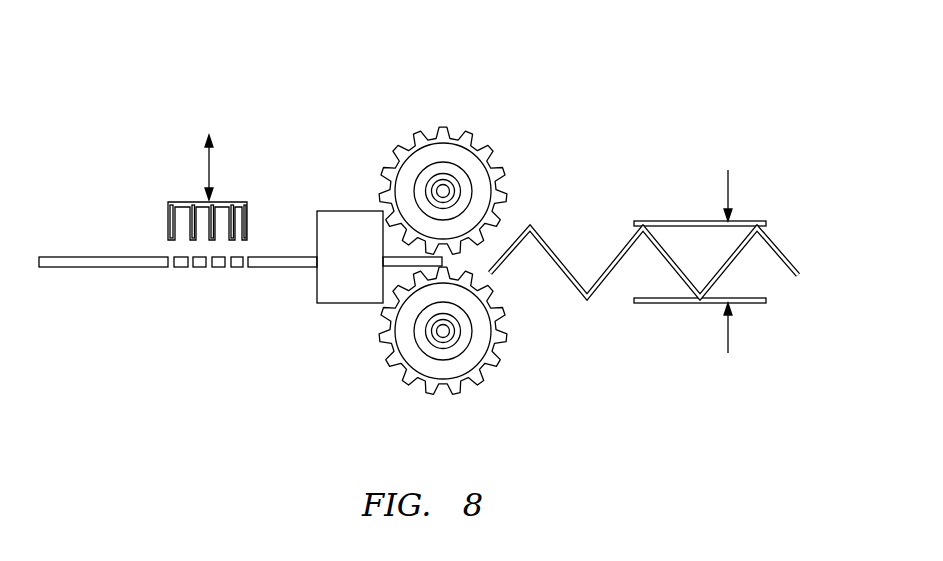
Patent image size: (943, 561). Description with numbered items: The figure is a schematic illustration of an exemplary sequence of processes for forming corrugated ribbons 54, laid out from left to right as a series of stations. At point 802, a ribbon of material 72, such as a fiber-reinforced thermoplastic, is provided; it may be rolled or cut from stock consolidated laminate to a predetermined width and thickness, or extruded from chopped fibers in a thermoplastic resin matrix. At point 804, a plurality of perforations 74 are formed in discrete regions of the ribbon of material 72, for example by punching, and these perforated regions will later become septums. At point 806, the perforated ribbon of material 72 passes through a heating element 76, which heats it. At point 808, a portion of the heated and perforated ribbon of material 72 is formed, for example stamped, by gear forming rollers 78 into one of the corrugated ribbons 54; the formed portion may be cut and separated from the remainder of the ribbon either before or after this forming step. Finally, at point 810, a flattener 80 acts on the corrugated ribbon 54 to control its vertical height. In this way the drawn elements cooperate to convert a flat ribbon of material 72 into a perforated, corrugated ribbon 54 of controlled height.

The corrugated ribbon 54 is at (793, 253).
The ribbon of material 72 is at (75, 268).
The perforations 74 is at (193, 267).
The heating element 76 is at (338, 210).
The gear forming rollers 78 is at (477, 140).
The flattener 80 is at (662, 303).
The point 802 is at (87, 228).
The point 804 is at (208, 283).
The point 806 is at (344, 317).
The point 808 is at (452, 117).
The point 810 is at (713, 155).